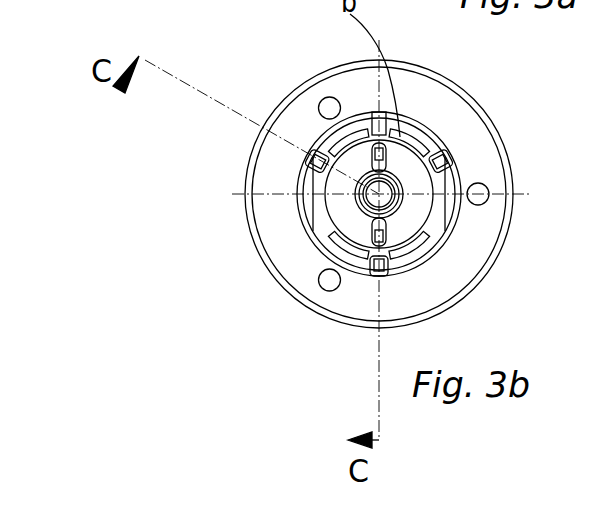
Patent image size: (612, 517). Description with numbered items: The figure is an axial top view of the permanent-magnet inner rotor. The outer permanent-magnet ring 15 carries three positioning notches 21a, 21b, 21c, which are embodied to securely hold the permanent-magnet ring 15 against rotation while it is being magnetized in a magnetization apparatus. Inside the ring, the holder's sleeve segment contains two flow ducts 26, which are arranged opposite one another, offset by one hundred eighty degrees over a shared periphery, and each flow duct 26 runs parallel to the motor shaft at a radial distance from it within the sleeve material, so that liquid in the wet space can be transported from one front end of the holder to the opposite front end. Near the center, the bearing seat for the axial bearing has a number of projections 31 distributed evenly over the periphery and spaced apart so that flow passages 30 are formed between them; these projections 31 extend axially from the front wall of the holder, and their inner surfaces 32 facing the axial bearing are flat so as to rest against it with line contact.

The permanent-magnet ring 15 is at (466, 125).
The positioning notch 21a is at (311, 152).
The positioning notch 21b is at (450, 153).
The positioning notch 21c is at (388, 280).
The flow duct 26 is at (443, 153).
The flow passage 30 is at (309, 160).
The projection 31 is at (315, 193).
The inner surface 32 is at (357, 184).